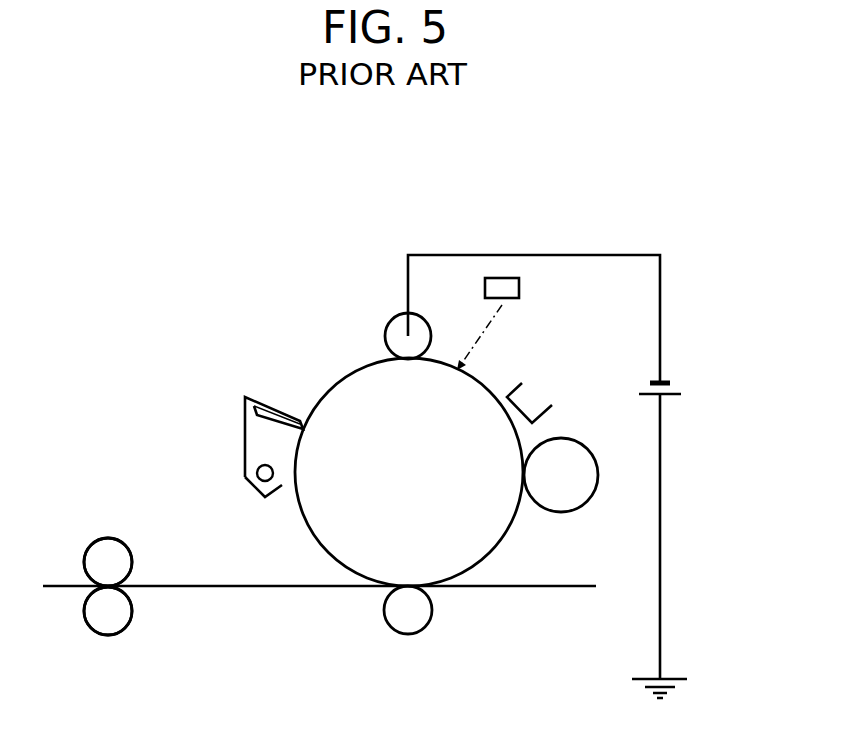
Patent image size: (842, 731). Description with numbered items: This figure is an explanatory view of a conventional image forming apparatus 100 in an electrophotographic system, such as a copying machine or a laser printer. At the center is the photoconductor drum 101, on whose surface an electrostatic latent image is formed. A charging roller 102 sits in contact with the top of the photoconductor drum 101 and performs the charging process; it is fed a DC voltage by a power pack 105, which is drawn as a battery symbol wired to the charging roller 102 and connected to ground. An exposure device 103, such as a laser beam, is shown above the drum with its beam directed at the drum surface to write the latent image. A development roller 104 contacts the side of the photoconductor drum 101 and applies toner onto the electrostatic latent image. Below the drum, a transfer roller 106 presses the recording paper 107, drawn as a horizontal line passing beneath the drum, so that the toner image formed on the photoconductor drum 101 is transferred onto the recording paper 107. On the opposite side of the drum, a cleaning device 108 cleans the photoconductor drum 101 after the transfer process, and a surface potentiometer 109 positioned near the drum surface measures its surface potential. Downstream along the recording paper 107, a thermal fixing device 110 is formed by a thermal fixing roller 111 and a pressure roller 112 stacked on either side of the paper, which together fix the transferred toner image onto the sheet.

The image forming apparatus 100 is at (268, 279).
The photoconductor drum 101 is at (303, 517).
The charging roller 102 is at (395, 313).
The exposure device 103 is at (519, 288).
The development roller 104 is at (565, 512).
The power pack 105 is at (683, 388).
The transfer roller 106 is at (413, 634).
The recording paper 107 is at (217, 588).
The cleaning device 108 is at (280, 406).
The surface potentiometer 109 is at (522, 383).
The thermal fixing device 110 is at (112, 523).
The thermal fixing roller 111 is at (88, 560).
The pressure roller 112 is at (88, 612).